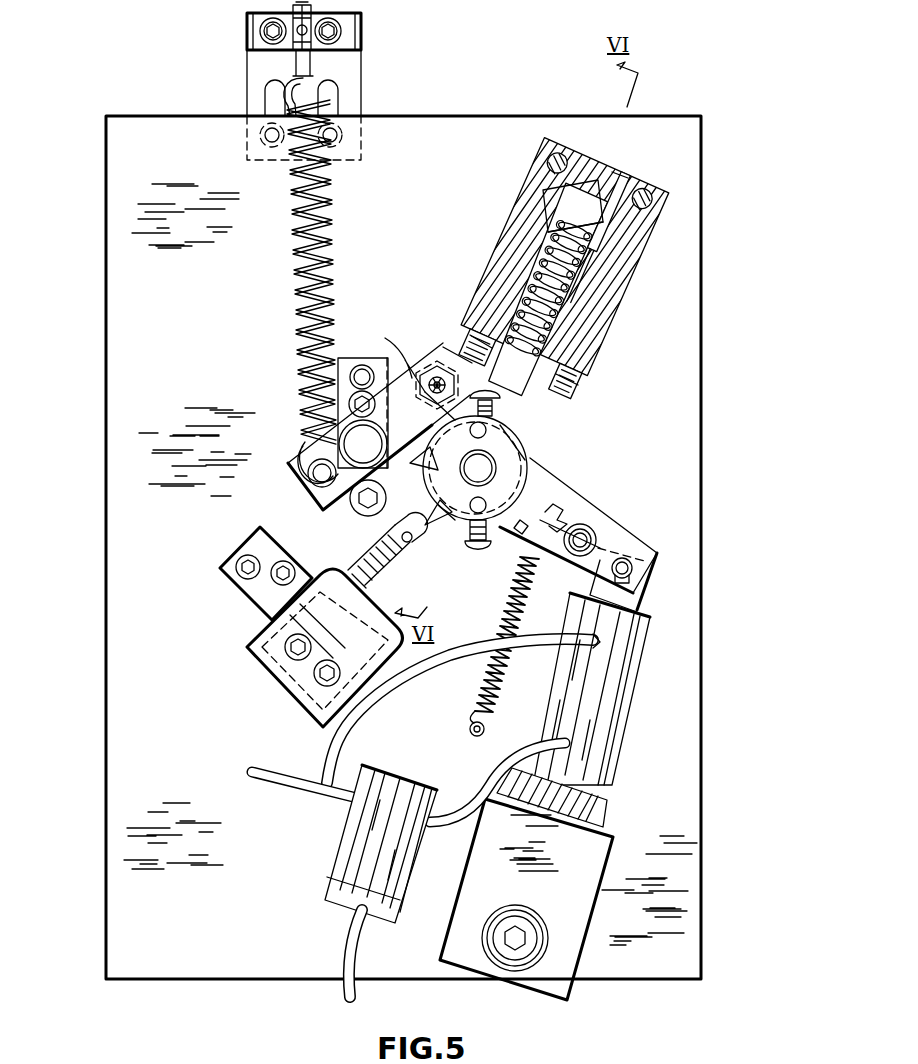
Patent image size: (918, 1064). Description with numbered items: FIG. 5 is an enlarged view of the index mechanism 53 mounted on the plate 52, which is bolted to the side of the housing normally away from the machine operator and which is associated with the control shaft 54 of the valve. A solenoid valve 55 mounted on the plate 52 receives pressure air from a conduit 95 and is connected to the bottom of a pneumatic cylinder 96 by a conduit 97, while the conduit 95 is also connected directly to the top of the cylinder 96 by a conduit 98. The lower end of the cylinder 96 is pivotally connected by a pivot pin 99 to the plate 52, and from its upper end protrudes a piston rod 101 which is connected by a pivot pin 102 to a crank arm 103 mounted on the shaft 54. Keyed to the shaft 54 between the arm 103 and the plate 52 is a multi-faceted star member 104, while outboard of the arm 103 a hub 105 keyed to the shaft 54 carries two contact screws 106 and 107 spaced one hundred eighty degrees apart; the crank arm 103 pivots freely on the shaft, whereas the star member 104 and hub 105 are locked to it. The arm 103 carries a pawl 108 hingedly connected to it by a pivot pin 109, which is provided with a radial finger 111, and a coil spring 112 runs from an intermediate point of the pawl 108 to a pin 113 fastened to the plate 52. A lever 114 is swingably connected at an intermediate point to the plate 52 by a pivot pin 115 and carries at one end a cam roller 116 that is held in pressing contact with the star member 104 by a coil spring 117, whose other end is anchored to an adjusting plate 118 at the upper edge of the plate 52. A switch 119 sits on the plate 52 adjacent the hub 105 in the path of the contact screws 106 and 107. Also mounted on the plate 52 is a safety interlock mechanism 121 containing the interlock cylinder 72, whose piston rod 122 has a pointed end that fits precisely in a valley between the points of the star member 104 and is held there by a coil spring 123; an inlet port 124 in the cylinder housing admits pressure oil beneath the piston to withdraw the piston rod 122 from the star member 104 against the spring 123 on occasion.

The plate 52 is at (116, 268).
The index mechanism 53 is at (580, 517).
The control shaft 54 is at (496, 462).
The solenoid valve 55 is at (348, 858).
The interlock cylinder 72 is at (613, 257).
The conduit 95 is at (273, 778).
The pneumatic cylinder 96 is at (590, 810).
The conduit 97 is at (453, 818).
The conduit 98 is at (445, 663).
The pivot pin 99 is at (525, 930).
The piston rod 101 is at (630, 600).
The pivot pin 102 is at (647, 577).
The crank arm 103 is at (598, 538).
The star member 104 is at (527, 428).
The hub 105 is at (450, 507).
The contact screw 106 is at (503, 399).
The contact screw 107 is at (480, 553).
The pawl 108 is at (568, 483).
The pivot pin 109 is at (600, 535).
The radial finger 111 is at (515, 530).
The coil spring 112 is at (503, 618).
The pin 113 is at (472, 733).
The lever 114 is at (402, 372).
The pivot pin 115 is at (340, 447).
The cam roller 116 is at (438, 364).
The coil spring 117 is at (293, 270).
The adjusting plate 118 is at (358, 73).
The switch 119 is at (362, 565).
The safety interlock mechanism 121 is at (613, 290).
The piston rod 122 is at (555, 338).
The coil spring 123 is at (540, 208).
The inlet port 124 is at (483, 282).